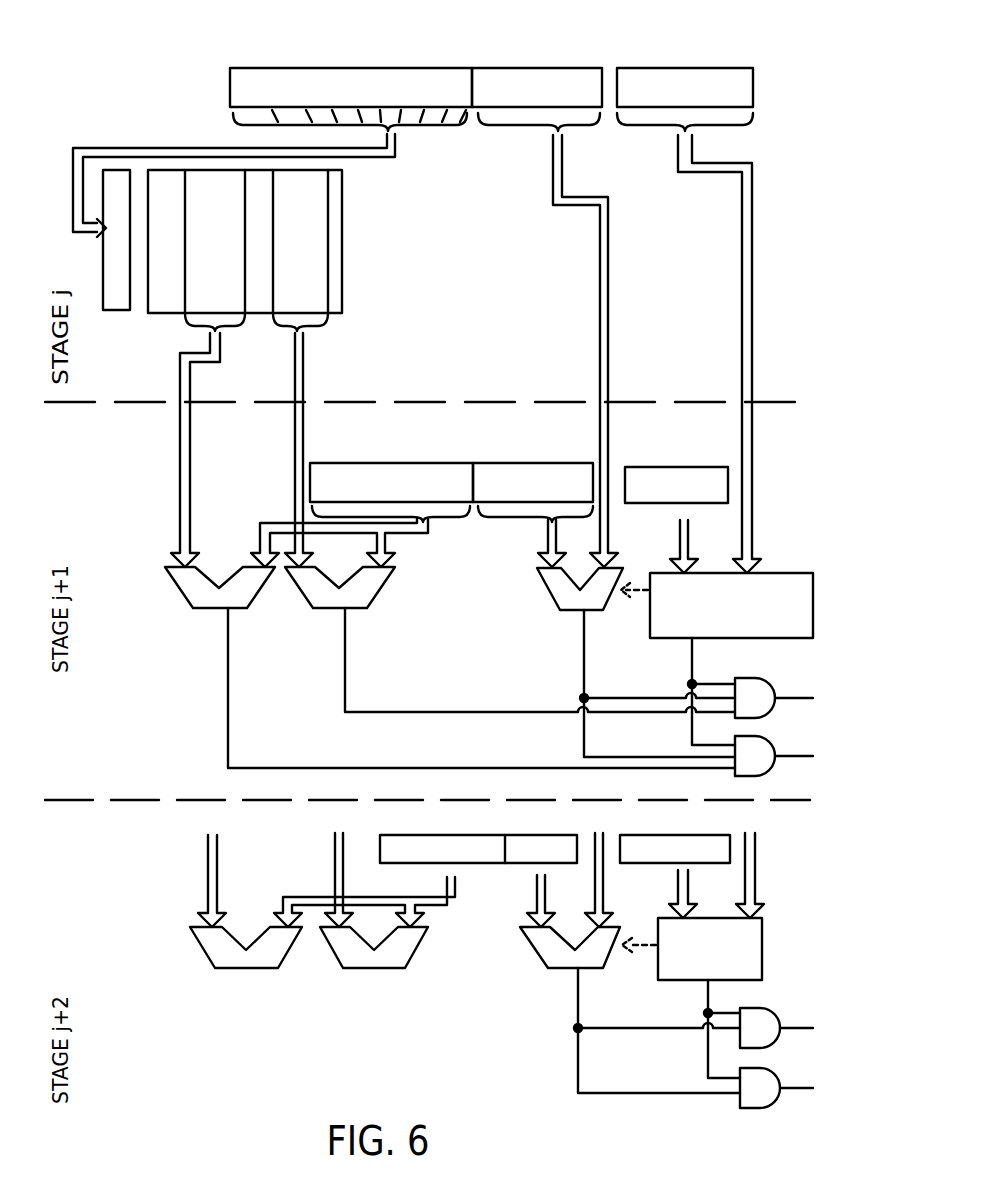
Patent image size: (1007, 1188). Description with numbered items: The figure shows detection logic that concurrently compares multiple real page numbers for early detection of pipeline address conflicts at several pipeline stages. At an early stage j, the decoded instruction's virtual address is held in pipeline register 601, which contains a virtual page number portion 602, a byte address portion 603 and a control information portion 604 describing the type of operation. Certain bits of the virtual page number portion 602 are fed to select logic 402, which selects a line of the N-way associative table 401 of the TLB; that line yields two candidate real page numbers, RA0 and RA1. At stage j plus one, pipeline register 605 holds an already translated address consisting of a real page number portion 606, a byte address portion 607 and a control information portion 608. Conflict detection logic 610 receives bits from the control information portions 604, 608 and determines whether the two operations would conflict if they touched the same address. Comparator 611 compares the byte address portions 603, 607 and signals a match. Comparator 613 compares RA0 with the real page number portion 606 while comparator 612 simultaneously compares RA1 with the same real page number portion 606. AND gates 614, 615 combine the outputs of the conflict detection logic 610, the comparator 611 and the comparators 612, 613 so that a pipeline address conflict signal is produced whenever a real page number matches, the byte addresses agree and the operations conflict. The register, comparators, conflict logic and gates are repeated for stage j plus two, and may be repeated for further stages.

The pipeline register 601 is at (220, 65).
The virtual page number portion 602 is at (350, 67).
The byte address portion 603 is at (522, 67).
The control information portion 604 is at (672, 67).
The N-way associative table 401 is at (342, 213).
The select logic 402 is at (103, 290).
The pipeline register 605 is at (291, 462).
The page number portion 606 is at (405, 462).
The byte address portion 607 is at (530, 462).
The control information portion 608 is at (680, 466).
The conflict detection logic 610 is at (770, 571).
The comparator 611 is at (548, 592).
The comparator 612 is at (300, 597).
The comparator 613 is at (178, 590).
The AND gate 614 is at (768, 690).
The AND gate 615 is at (742, 743).